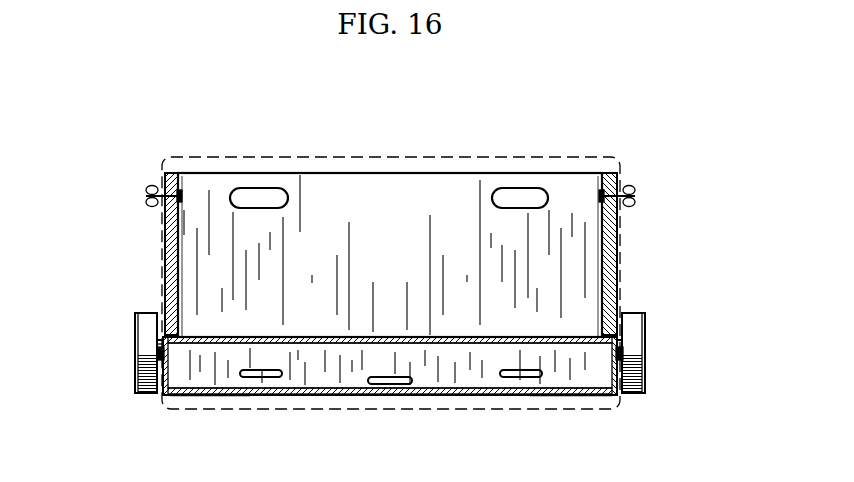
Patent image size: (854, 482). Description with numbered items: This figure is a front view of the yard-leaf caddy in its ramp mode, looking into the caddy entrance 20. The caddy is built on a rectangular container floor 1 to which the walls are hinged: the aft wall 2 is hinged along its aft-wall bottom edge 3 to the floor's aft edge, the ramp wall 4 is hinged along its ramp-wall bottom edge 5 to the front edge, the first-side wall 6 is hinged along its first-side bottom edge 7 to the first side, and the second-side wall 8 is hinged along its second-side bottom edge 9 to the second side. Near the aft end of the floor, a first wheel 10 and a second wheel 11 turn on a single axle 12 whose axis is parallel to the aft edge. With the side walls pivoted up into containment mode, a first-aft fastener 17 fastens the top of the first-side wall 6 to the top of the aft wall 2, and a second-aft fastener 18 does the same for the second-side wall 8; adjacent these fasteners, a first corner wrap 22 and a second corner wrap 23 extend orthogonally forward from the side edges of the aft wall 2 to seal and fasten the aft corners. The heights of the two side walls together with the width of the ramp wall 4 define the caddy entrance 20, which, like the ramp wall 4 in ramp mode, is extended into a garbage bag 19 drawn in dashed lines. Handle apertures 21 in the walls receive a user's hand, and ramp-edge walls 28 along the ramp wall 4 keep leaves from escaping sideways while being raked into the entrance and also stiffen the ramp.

The container floor 1 is at (308, 348).
The aft wall 2 is at (352, 222).
The aft-wall bottom edge 3 is at (167, 309).
The ramp wall 4 is at (338, 375).
The ramp-wall bottom edge 5 is at (458, 345).
The first-side wall 6 is at (165, 246).
The first-side bottom edge 7 is at (161, 346).
The second-side wall 8 is at (615, 273).
The second-side bottom edge 9 is at (618, 331).
The first wheel 10 is at (150, 385).
The second wheel 11 is at (635, 376).
The axle 12 is at (159, 358).
The first-aft fastener 17 is at (148, 194).
The second-aft fastener 18 is at (633, 194).
The garbage bag 19 is at (377, 158).
The caddy entrance 20 is at (690, 115).
The handle aperture 21 is at (519, 196).
The first corner wrap 22 is at (170, 279).
The second corner wrap 23 is at (613, 293).
The ramp-edge walls 28 is at (207, 393).